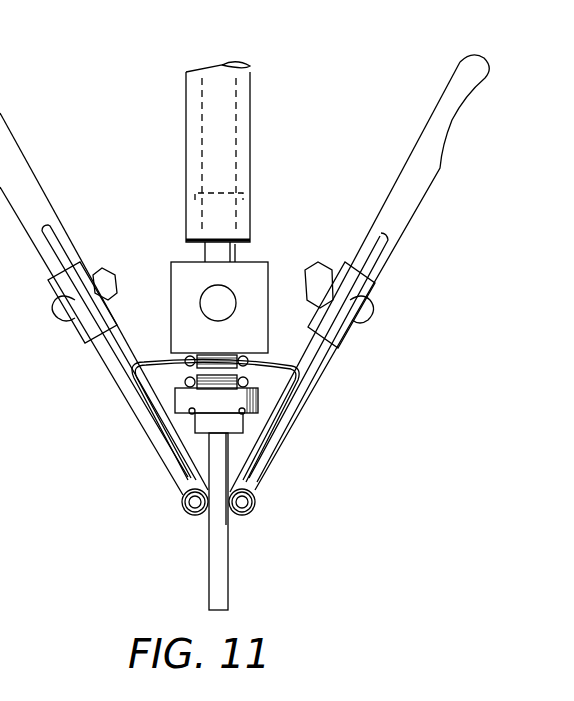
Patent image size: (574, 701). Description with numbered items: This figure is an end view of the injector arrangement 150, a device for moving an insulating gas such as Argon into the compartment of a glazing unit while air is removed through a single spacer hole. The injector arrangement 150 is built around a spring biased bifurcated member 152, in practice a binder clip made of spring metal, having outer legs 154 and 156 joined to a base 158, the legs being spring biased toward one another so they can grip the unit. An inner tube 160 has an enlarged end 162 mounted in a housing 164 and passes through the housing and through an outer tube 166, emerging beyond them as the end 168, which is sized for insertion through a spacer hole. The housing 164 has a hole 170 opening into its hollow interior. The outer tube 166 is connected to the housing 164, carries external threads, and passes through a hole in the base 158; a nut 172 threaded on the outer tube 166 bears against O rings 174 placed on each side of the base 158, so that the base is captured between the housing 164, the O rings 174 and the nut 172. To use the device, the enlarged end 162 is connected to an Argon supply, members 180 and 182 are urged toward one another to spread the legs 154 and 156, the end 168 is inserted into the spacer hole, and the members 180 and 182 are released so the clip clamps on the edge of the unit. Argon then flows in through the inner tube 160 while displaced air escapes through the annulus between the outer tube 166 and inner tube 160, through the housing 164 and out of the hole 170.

The injector arrangement 150 is at (324, 106).
The spring biased bifurcated member 152 is at (292, 348).
The outer leg 154 is at (174, 442).
The outer leg 156 is at (283, 436).
The base 158 is at (128, 362).
The inner tube 160 is at (188, 214).
The enlarged end 162 is at (236, 253).
The housing 164 is at (258, 262).
The outer tube 166 is at (193, 437).
The end of inner tube 168 is at (208, 572).
The hole 170 is at (227, 298).
The nut 172 is at (177, 399).
The O rings 174 is at (186, 384).
The member 180 is at (443, 172).
The member 182 is at (2, 113).